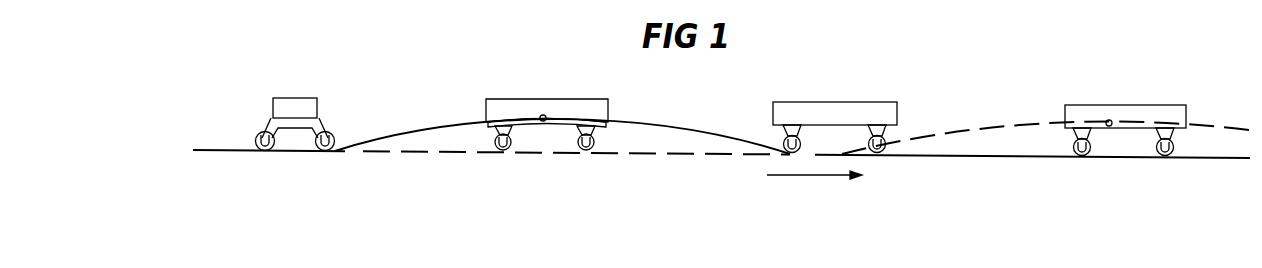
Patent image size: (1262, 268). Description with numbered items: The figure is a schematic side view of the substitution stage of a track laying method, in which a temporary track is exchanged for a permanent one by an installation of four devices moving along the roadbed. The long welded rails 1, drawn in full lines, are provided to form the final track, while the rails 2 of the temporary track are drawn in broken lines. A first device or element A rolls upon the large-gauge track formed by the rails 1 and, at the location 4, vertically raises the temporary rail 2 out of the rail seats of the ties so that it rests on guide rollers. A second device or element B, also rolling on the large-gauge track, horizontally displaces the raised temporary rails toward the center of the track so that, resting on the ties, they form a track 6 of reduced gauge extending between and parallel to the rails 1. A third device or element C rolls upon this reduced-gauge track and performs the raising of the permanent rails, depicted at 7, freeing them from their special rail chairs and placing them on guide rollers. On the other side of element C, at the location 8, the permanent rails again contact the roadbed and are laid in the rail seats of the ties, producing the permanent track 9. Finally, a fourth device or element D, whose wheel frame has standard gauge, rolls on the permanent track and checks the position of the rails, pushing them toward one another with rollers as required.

The long welded rails 1 is at (1000, 157).
The temporary track rails 2 is at (1232, 126).
The raising location of the temporary rail 4 is at (1109, 119).
The track of reduced track gauge 6 is at (668, 154).
The raising of the permanent rails 7 is at (563, 116).
The laying location of the permanent rails 8 is at (377, 139).
The permanent track 9 is at (228, 150).
The first device or element A is at (1125, 112).
The second device or element B is at (811, 108).
The third device or element C is at (547, 103).
The fourth device or element D is at (295, 105).